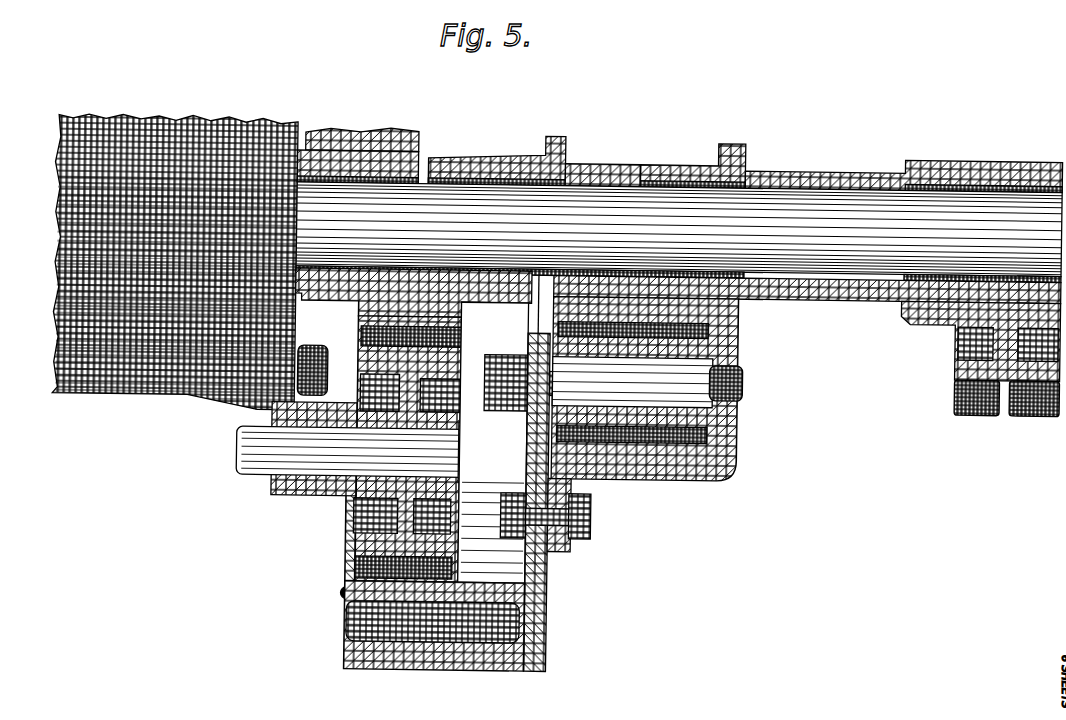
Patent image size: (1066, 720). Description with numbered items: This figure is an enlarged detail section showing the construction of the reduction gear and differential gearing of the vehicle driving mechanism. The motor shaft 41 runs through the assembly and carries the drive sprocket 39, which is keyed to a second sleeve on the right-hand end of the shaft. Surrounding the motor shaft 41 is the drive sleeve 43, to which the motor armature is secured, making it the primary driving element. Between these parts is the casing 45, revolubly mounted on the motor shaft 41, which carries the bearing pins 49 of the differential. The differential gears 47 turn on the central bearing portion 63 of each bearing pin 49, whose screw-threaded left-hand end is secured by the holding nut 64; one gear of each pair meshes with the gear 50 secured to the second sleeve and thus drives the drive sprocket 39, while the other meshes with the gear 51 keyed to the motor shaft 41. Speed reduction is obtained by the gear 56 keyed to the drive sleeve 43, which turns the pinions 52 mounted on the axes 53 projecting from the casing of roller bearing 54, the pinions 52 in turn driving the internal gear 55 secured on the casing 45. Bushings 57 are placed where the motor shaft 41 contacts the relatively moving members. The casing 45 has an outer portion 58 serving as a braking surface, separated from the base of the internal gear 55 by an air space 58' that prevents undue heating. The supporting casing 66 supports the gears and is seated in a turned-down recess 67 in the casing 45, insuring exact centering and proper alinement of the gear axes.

The drive sprocket 39 is at (977, 381).
The motor shaft 41 is at (679, 229).
The drive sleeve 43 is at (303, 130).
The casing 45 is at (538, 570).
The differential gears 47 is at (707, 424).
The bearing pins 49 is at (727, 380).
The gear 50 is at (695, 292).
The gear 51 is at (603, 171).
The pinions 52 is at (397, 538).
The axes 53 is at (267, 476).
The casing of roller bearing 54 is at (117, 313).
The internal gear 55 is at (360, 566).
The gear 56 is at (390, 338).
The bushings 57 is at (365, 150).
The outer portion 58 is at (434, 644).
The air space 58' is at (406, 621).
The central bearing portion 63 is at (690, 373).
The holding nut 64 is at (587, 453).
The supporting casing 66 is at (700, 468).
The recess 67 is at (573, 542).